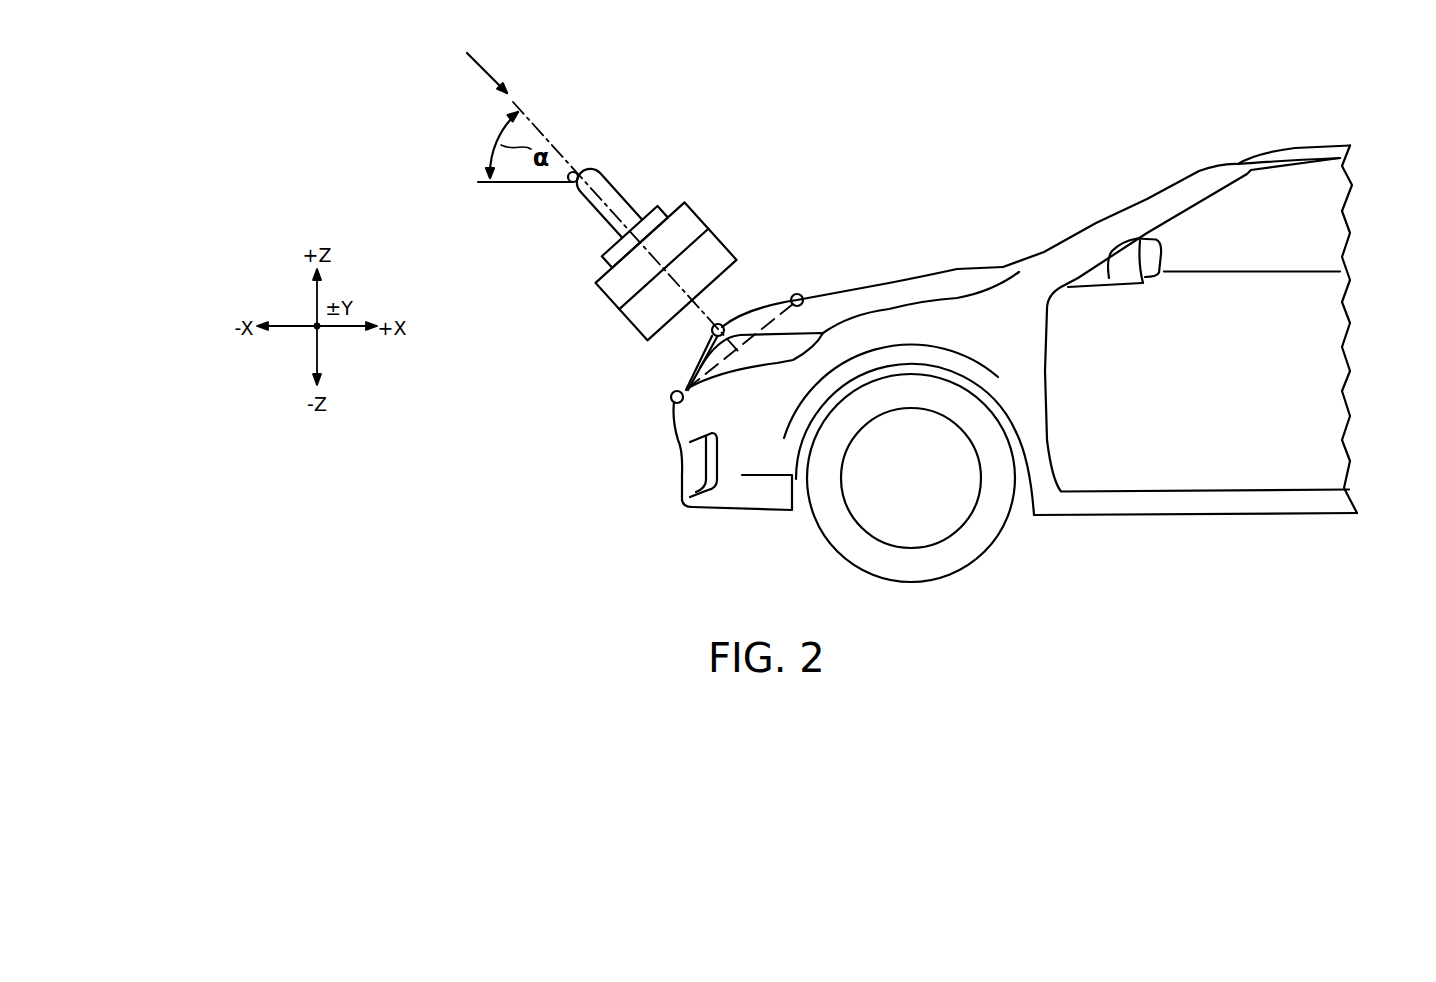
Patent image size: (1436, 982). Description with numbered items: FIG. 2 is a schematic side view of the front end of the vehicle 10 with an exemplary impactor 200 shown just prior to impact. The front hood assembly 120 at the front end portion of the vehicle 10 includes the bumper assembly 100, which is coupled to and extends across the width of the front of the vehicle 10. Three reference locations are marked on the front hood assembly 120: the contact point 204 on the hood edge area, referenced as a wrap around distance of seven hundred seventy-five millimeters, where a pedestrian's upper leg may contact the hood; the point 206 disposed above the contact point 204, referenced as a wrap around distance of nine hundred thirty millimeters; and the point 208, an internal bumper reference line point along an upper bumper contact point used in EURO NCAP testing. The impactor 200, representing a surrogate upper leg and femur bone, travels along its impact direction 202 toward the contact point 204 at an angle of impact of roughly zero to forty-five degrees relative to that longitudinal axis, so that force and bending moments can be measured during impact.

The vehicle 10 is at (1001, 97).
The bumper assembly 100 is at (898, 303).
The front hood assembly 120 is at (803, 213).
The impactor 200 is at (714, 230).
The impact direction 202 is at (478, 65).
The contact point 204 is at (711, 334).
The point 206 is at (797, 294).
The IBRL point 208 is at (670, 397).